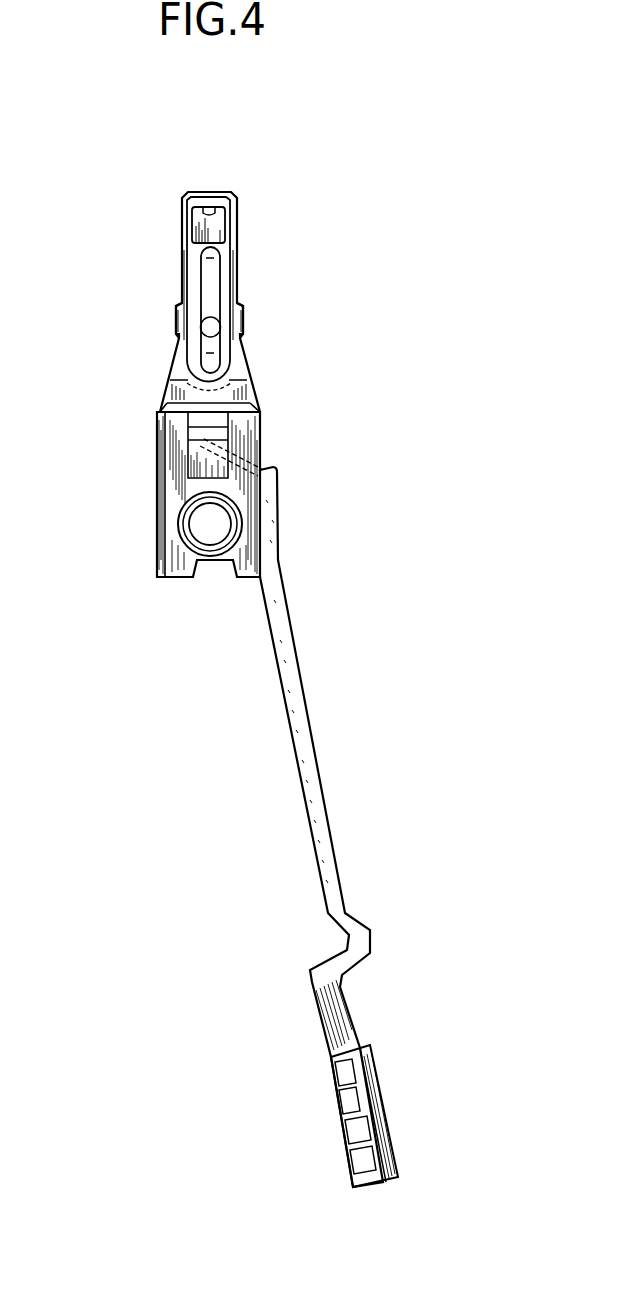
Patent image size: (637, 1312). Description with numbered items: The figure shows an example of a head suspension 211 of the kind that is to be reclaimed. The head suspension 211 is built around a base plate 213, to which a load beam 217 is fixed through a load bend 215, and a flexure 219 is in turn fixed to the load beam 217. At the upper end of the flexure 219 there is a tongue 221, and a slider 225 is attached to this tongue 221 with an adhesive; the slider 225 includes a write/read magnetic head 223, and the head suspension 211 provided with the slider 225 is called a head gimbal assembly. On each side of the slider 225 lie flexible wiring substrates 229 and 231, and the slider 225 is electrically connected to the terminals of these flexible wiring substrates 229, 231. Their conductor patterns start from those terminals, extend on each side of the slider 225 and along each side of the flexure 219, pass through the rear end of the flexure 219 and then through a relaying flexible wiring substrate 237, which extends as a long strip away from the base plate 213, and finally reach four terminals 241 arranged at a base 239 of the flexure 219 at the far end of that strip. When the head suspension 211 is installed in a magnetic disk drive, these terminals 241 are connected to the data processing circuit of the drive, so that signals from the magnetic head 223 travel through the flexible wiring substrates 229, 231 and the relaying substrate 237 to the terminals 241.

The head suspension 211 is at (366, 205).
The base plate 213 is at (166, 523).
The load bend 215 is at (162, 407).
The load beam 217 is at (177, 377).
The flexure 219 is at (223, 284).
The tongue 221 is at (182, 228).
The write/read magnetic head 223 is at (208, 208).
The slider 225 is at (225, 227).
The flexible wiring substrate 229 is at (225, 336).
The flexible wiring substrate 231 is at (178, 345).
The relaying flexible wiring substrate 237 is at (305, 773).
The base of the flexure 239 is at (385, 1105).
The terminals 241 is at (361, 1167).